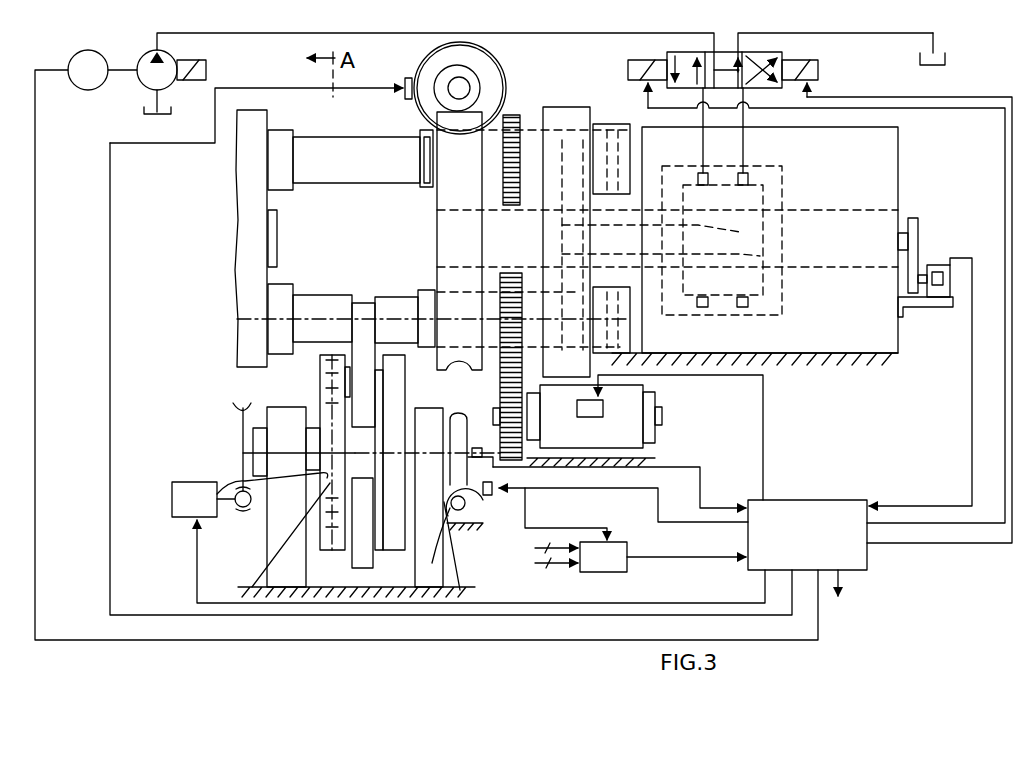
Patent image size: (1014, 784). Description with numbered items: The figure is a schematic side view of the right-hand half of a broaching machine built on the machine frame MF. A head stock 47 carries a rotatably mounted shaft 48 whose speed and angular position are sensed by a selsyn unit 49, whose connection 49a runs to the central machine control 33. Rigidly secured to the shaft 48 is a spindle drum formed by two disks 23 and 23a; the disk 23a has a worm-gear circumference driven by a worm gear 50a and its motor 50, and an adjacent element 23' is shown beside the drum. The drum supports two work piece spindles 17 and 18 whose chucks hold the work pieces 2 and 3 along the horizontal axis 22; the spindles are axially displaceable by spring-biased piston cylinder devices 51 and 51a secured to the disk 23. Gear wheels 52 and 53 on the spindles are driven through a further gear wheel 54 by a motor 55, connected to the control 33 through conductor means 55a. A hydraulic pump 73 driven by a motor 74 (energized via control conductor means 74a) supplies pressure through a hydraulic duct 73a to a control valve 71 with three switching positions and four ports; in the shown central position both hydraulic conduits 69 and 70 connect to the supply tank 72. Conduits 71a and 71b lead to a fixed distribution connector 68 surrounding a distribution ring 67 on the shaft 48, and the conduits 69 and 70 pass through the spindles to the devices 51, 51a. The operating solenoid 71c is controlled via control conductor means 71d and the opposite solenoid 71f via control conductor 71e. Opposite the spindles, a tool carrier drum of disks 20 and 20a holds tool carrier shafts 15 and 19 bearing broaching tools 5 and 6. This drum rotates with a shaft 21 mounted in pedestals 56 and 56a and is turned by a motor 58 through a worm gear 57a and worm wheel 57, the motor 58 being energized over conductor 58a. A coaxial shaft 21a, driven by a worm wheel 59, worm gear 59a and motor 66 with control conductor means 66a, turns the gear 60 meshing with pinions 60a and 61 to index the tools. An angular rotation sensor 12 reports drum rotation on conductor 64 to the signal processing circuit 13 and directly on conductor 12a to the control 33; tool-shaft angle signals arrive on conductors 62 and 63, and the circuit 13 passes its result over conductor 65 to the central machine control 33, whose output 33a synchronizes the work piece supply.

The motor 74 is at (74, 53).
The control conductor means 74a is at (36, 156).
The hydraulic pump 73 is at (148, 58).
The supply tank 72 is at (952, 50).
The hydraulic duct 73a is at (298, 33).
The motor 50 is at (486, 78).
The worm gear 50a is at (448, 78).
The machine frame wall 23' is at (236, 238).
The work piece 3 is at (367, 180).
The spindle drum disk 23a is at (450, 142).
The gear wheel 53 is at (505, 172).
The work piece spindle 18 is at (520, 188).
The work piece spindle 17 is at (520, 290).
The axis 22 is at (237, 319).
The work piece 2 is at (313, 303).
The gear wheel 52 is at (520, 305).
The further gear wheel 54 is at (500, 385).
The spindle drum disk 23 is at (566, 226).
The shaft 48 is at (526, 241).
The piston cylinder device 51 is at (614, 124).
The piston cylinder device 51a is at (630, 340).
The control valve 71 is at (820, 59).
The solenoid 71f is at (637, 66).
The operating solenoid 71c is at (812, 78).
The control conductor 71e is at (1005, 178).
The control conductor means 71d is at (902, 546).
The conduit 71a is at (703, 153).
The conduit 71b is at (743, 153).
The head stock 47 is at (886, 186).
The fixed distribution connector 68 is at (766, 185).
The distribution ring 67 is at (770, 208).
The hydraulic conduit 70 is at (762, 230).
The hydraulic conduit 69 is at (760, 253).
The selsyn unit 49 is at (937, 266).
The sensor line 49a is at (972, 410).
The motor 55 is at (640, 410).
The conductor means 55a is at (770, 404).
The shaft 21 is at (408, 437).
The pinion gear 61 is at (320, 366).
The tool carrier shaft 15 is at (345, 390).
The worm wheel 59 is at (236, 406).
The worm gear 59a is at (257, 520).
The shaft 21a is at (243, 453).
The motor 66 is at (190, 482).
The tool carrier drum disk 20a is at (172, 500).
The control conductor means 66a is at (197, 548).
The gear 60 is at (262, 540).
The pinion gear 60a is at (291, 535).
The pedestal 56a is at (262, 578).
The broaching tool 6 is at (357, 553).
The broaching tool 5 is at (366, 415).
The tool carrier shaft 19 is at (386, 545).
The tool carrier drum disk 20 is at (395, 518).
The worm wheel 57 is at (472, 501).
The motor 58 is at (473, 509).
The conductor 58a is at (530, 488).
The pedestal 56 is at (446, 557).
The worm gear 57a is at (438, 547).
The angular rotation sensor 12 is at (477, 448).
The conductor 12a is at (700, 468).
The signal processing circuit 13 is at (597, 573).
The control conductor 62 is at (550, 572).
The control conductor 63 is at (553, 568).
The conductor 64 is at (597, 526).
The conductor 65 is at (690, 556).
The central machine control 33 is at (806, 455).
The control output 33a is at (843, 582).
The machine frame MF is at (342, 595).